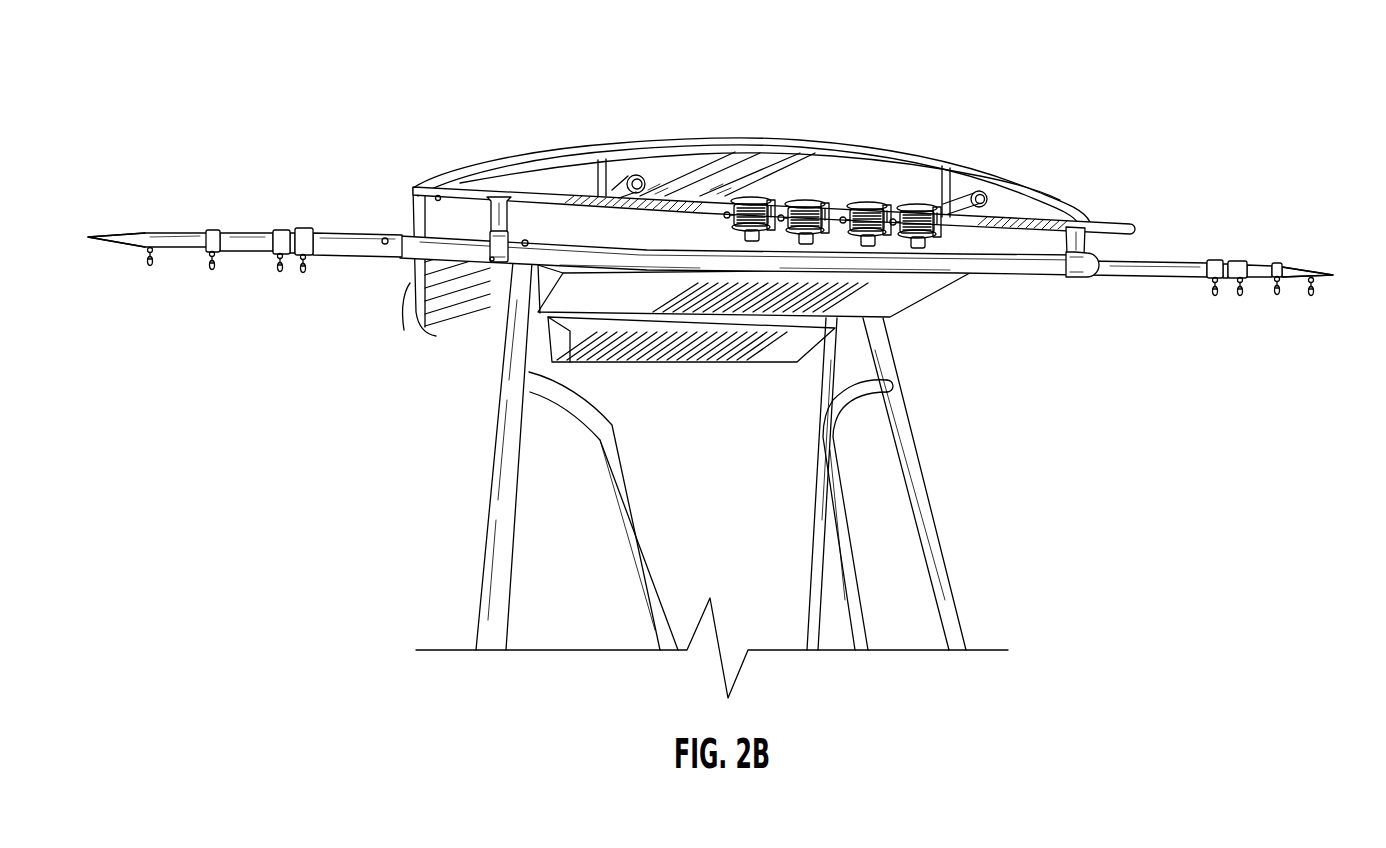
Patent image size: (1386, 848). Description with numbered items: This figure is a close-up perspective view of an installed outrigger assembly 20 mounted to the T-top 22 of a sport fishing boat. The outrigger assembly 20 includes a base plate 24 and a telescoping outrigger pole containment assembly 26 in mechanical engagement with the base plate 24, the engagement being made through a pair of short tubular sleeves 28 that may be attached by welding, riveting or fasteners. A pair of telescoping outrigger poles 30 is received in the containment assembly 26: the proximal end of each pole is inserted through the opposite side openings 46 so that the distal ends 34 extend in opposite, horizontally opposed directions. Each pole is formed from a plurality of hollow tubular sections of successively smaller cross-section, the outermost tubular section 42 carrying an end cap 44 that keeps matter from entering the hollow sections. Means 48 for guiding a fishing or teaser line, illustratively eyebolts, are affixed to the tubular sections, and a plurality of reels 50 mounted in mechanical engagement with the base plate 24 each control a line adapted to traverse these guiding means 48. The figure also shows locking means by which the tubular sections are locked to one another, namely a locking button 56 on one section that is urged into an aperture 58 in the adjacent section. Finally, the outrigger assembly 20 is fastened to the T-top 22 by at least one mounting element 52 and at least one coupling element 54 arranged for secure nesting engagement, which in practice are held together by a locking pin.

The outrigger assembly 20 is at (1011, 288).
The T-top 22 is at (736, 122).
The base plate 24 is at (537, 192).
The telescoping outrigger pole containment assembly 26 is at (680, 250).
The short tubular sleeves 28 is at (496, 190).
The telescoping outrigger poles 30 is at (250, 195).
The distal end 34 is at (115, 220).
The outermost tubular section 42 is at (186, 232).
The end cap 44 is at (134, 241).
The opposite side openings 46 is at (488, 265).
The means for guiding a fishing or teaser line 48 is at (150, 270).
The reels 50 is at (918, 204).
The mounting element 52 is at (612, 170).
The coupling element 54 is at (647, 168).
The locking button 56 is at (383, 239).
The aperture 58 is at (523, 246).